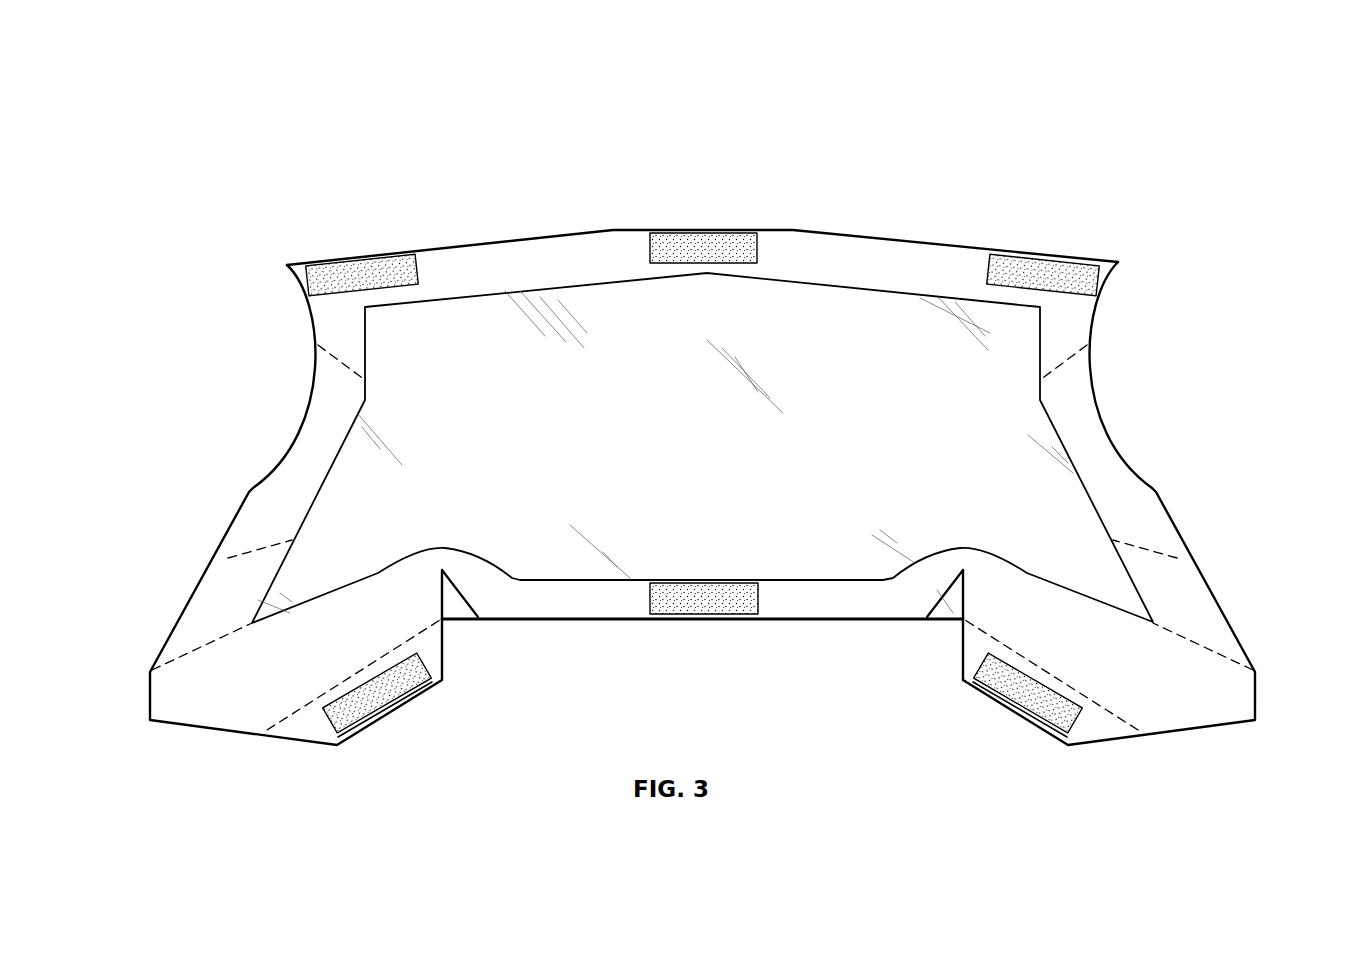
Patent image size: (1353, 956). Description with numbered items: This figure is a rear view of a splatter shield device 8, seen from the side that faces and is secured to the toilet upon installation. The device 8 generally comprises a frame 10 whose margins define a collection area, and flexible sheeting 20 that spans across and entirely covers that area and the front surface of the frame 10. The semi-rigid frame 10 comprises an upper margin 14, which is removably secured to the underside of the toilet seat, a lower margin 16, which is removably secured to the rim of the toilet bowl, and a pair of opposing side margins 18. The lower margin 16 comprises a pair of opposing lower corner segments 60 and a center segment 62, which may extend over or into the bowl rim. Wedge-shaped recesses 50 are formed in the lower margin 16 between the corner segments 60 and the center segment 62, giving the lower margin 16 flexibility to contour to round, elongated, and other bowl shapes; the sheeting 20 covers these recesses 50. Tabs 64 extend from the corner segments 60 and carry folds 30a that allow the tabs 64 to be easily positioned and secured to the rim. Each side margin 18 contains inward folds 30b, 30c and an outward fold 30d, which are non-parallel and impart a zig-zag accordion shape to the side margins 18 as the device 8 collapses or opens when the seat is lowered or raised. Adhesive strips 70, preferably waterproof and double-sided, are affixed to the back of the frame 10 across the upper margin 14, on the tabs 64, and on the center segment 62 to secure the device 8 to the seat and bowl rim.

The splatter shield device 8 is at (243, 153).
The frame 10 is at (883, 225).
The upper margin 14 is at (553, 258).
The lower margin 16 is at (790, 608).
The side margins 18 is at (310, 460).
The flexible sheeting 20 is at (808, 345).
The folds 30a is at (290, 708).
The inward folds 30b is at (338, 355).
The inward folds 30c is at (185, 653).
The outward folds 30d is at (242, 552).
The recesses 50 is at (463, 640).
The lower corner segments 60 is at (200, 697).
The center segment 62 is at (610, 600).
The tabs 64 is at (313, 727).
The adhesive strips 70 is at (357, 270).